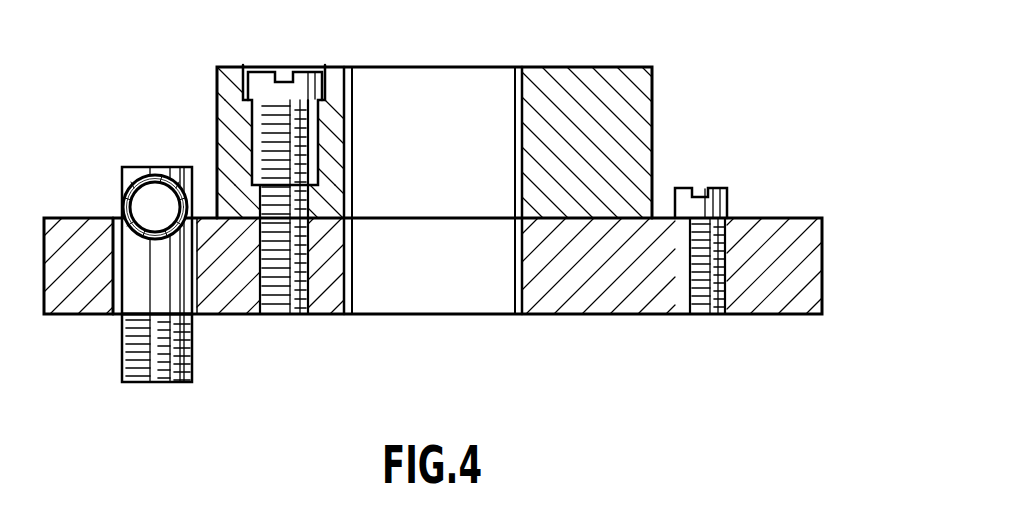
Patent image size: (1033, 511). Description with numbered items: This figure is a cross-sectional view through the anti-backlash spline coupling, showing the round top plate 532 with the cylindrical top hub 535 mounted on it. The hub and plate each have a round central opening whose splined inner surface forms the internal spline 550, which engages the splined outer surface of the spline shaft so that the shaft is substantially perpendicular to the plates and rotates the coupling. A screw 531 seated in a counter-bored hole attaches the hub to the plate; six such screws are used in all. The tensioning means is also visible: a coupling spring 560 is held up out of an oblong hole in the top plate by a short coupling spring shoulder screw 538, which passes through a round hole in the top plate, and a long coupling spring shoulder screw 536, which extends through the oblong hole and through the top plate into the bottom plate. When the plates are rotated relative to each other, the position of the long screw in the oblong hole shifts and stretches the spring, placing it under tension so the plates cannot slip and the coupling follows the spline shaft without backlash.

The screw 531 is at (272, 71).
The top plate 532 is at (823, 263).
The top hub 535 is at (653, 93).
The long coupling spring shoulder screw 536 is at (128, 343).
The short coupling spring shoulder screw 538 is at (692, 196).
The internal spline 550 is at (516, 67).
The coupling spring 560 is at (127, 200).